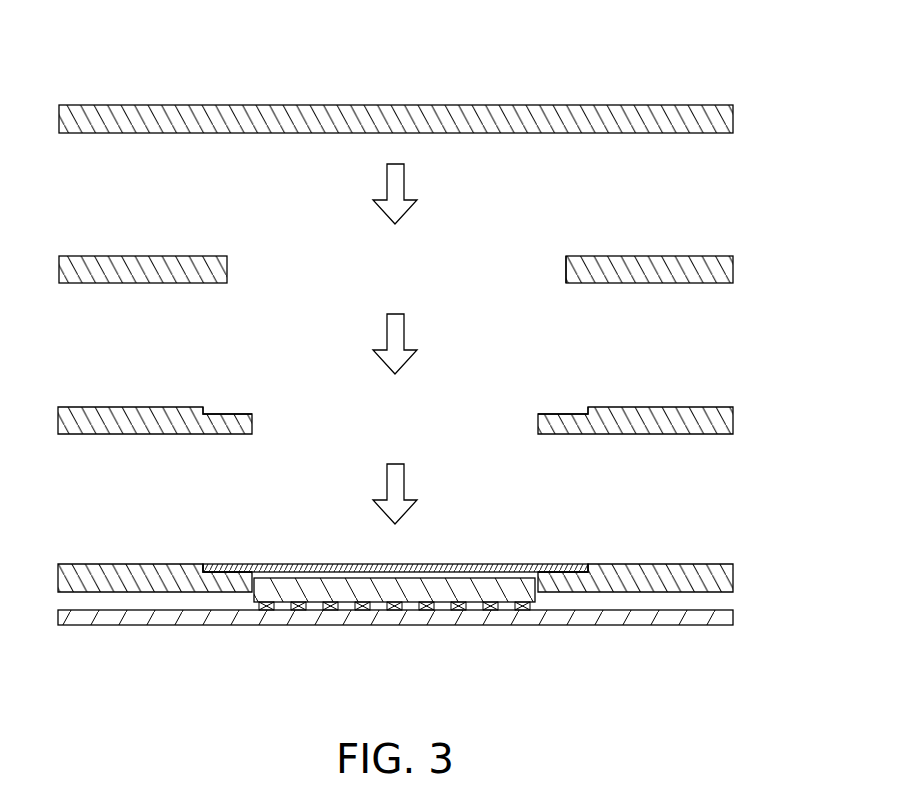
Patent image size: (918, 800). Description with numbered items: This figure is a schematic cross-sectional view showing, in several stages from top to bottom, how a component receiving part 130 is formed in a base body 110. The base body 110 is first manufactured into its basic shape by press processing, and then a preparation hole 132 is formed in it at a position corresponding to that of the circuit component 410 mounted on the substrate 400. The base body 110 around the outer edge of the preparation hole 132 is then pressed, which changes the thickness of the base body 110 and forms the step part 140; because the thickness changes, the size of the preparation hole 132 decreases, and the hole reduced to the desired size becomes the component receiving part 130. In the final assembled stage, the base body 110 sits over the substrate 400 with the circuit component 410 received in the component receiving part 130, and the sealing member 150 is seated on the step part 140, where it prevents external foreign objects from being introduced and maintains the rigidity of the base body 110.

The base body 110 is at (710, 108).
The preparation hole 132 is at (566, 266).
The component receiving part 130 is at (538, 425).
The step part 140 is at (207, 410).
The sealing member 150 is at (290, 565).
The substrate 400 is at (627, 620).
The circuit component 410 is at (413, 597).